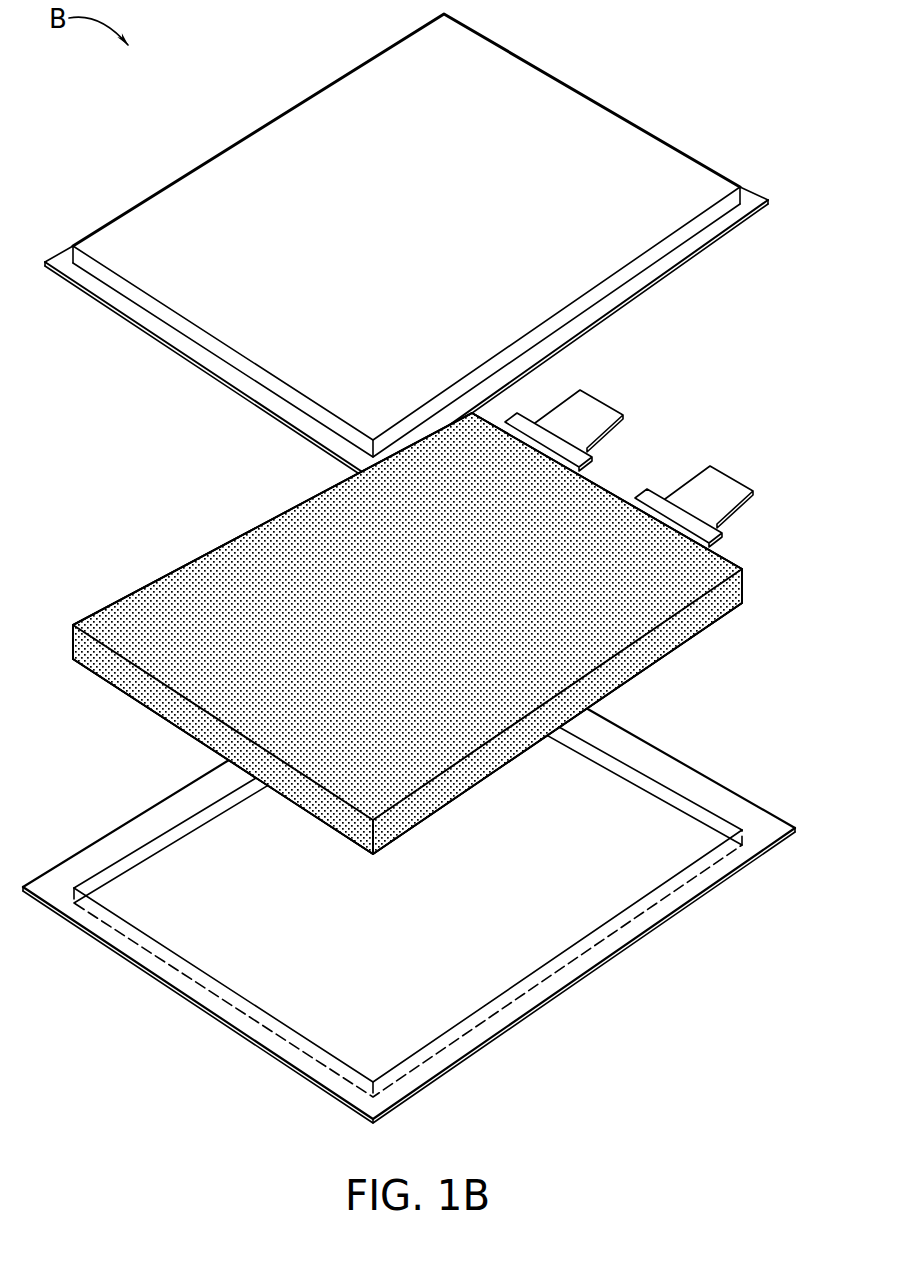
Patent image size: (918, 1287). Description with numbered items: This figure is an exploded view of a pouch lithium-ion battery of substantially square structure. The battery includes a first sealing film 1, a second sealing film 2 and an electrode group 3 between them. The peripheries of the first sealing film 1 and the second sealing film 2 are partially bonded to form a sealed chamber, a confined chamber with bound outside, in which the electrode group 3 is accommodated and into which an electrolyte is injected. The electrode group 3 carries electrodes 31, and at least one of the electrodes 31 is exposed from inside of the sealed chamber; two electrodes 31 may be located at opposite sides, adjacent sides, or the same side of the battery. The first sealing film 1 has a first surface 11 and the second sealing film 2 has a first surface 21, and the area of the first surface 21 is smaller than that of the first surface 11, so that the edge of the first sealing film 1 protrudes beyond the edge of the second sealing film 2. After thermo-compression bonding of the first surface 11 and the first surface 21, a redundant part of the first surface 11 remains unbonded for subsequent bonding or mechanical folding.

The first sealing film 1 is at (409, 875).
The first surface 11 is at (722, 797).
The second sealing film 2 is at (406, 248).
The first surface 21 is at (665, 262).
The electrode group 3 is at (428, 607).
The electrodes 31 is at (585, 417).